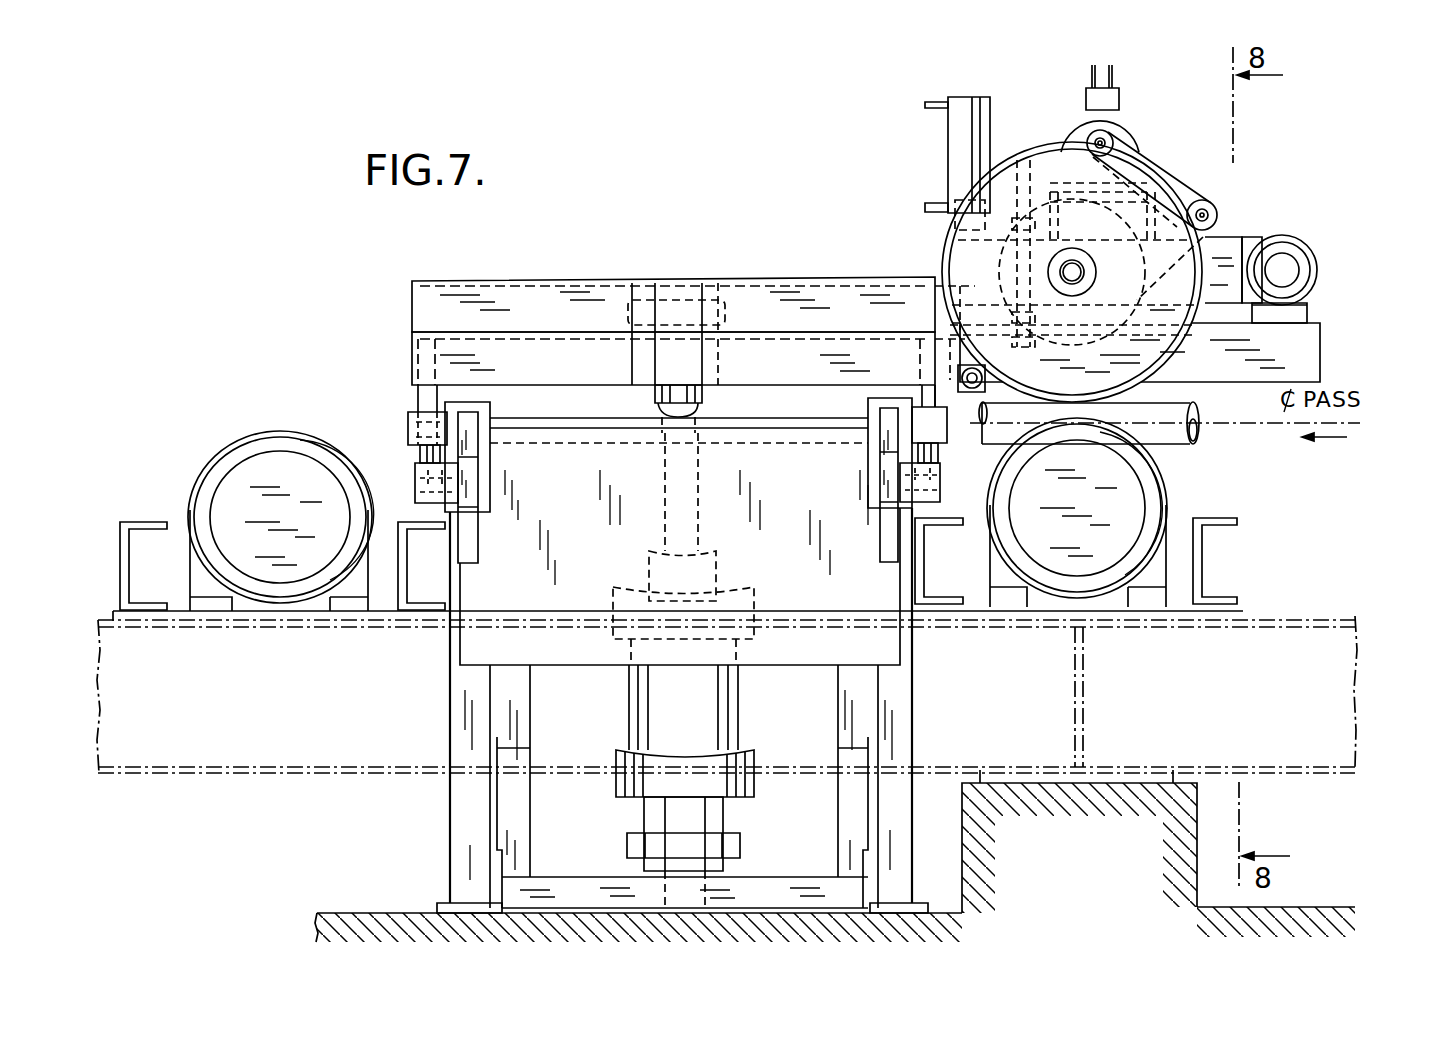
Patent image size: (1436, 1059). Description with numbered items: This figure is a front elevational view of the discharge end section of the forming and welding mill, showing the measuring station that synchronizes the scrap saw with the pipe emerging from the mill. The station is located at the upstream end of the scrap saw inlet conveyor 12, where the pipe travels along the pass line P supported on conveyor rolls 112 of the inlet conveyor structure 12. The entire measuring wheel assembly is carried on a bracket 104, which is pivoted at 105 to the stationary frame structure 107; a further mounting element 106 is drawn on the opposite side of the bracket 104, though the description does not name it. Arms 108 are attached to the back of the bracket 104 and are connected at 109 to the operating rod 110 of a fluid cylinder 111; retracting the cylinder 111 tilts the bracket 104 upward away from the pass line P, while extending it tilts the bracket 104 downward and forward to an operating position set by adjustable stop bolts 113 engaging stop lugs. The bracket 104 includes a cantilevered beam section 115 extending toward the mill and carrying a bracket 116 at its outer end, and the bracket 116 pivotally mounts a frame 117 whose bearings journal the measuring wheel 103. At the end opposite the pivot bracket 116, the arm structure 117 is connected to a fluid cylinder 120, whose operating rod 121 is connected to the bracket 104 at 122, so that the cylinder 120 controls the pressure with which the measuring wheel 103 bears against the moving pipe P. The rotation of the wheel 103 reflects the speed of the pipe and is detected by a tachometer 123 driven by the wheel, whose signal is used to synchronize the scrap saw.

The scrap saw inlet conveyor 12 is at (294, 711).
The measuring wheel 103 is at (1048, 175).
The bracket 104 is at (570, 375).
The pivot 105 is at (935, 430).
The adjusting block 106 is at (408, 426).
The stationary frame structure 107 is at (510, 706).
The arms 108 is at (725, 358).
The connection 109 is at (728, 311).
The operating rod 110 is at (698, 489).
The fluid cylinder 111 is at (723, 708).
The conveyor rolls 112 is at (1150, 507).
The adjustable stop bolts 113 is at (422, 478).
The cantilevered beam section 115 is at (1293, 353).
The bracket 116 is at (700, 410).
The frame 117 is at (1222, 253).
The fluid cylinder 120 is at (947, 156).
The operating rod 121 is at (958, 298).
The connection 122 is at (960, 376).
The tachometer 123 is at (1130, 135).
The pass line of the pipe P is at (1163, 430).